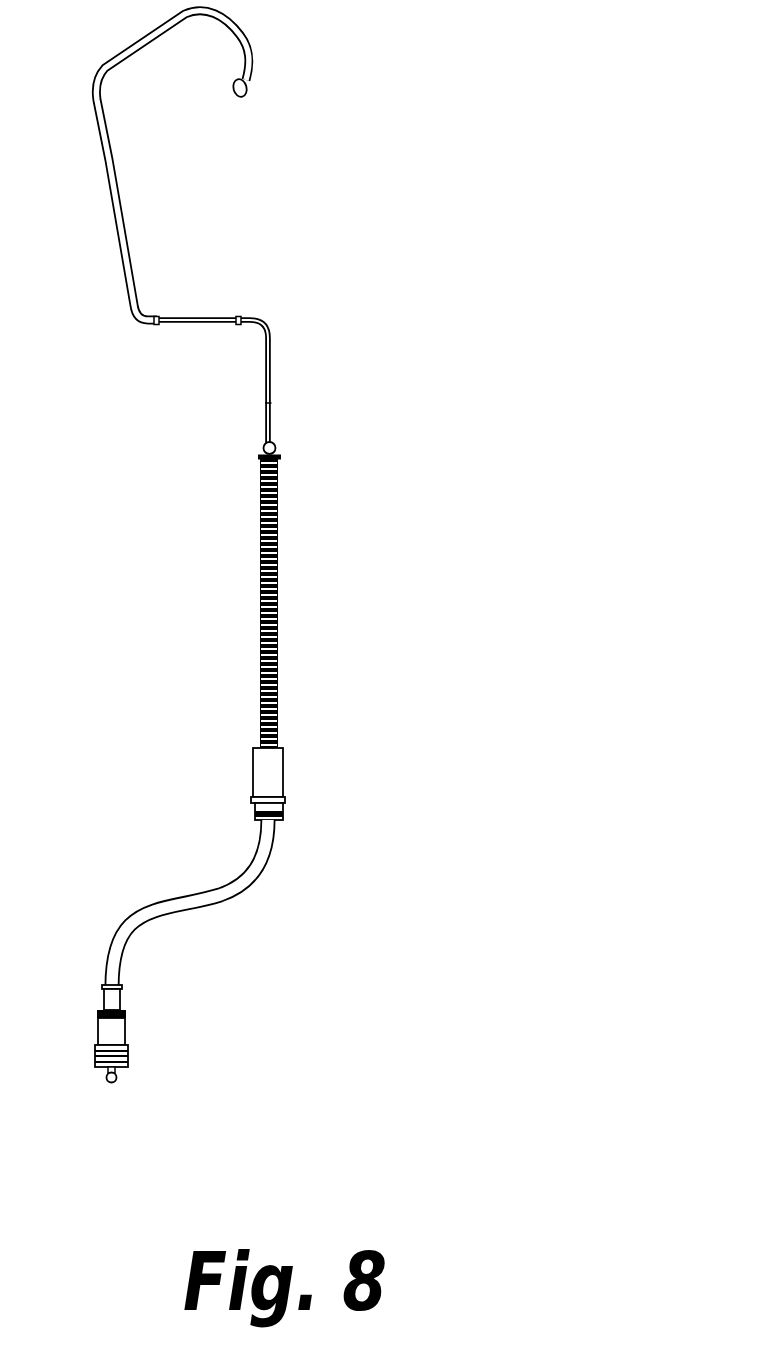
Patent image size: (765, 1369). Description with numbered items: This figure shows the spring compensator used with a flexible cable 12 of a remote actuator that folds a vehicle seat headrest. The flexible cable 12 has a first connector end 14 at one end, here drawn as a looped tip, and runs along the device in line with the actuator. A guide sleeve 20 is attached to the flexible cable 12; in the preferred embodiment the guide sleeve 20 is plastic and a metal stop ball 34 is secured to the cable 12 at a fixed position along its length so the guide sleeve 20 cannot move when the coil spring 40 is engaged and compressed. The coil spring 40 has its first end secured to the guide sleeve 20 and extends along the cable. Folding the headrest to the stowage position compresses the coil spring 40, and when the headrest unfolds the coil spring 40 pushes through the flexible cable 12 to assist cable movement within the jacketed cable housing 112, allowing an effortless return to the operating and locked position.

The flexible cable 12 is at (266, 331).
The first connector end 14 is at (247, 96).
The guide sleeve 20 is at (280, 458).
The metal stop ball 34 is at (276, 445).
The coil spring 40 is at (279, 573).
The jacketed cable housing 112 is at (238, 898).